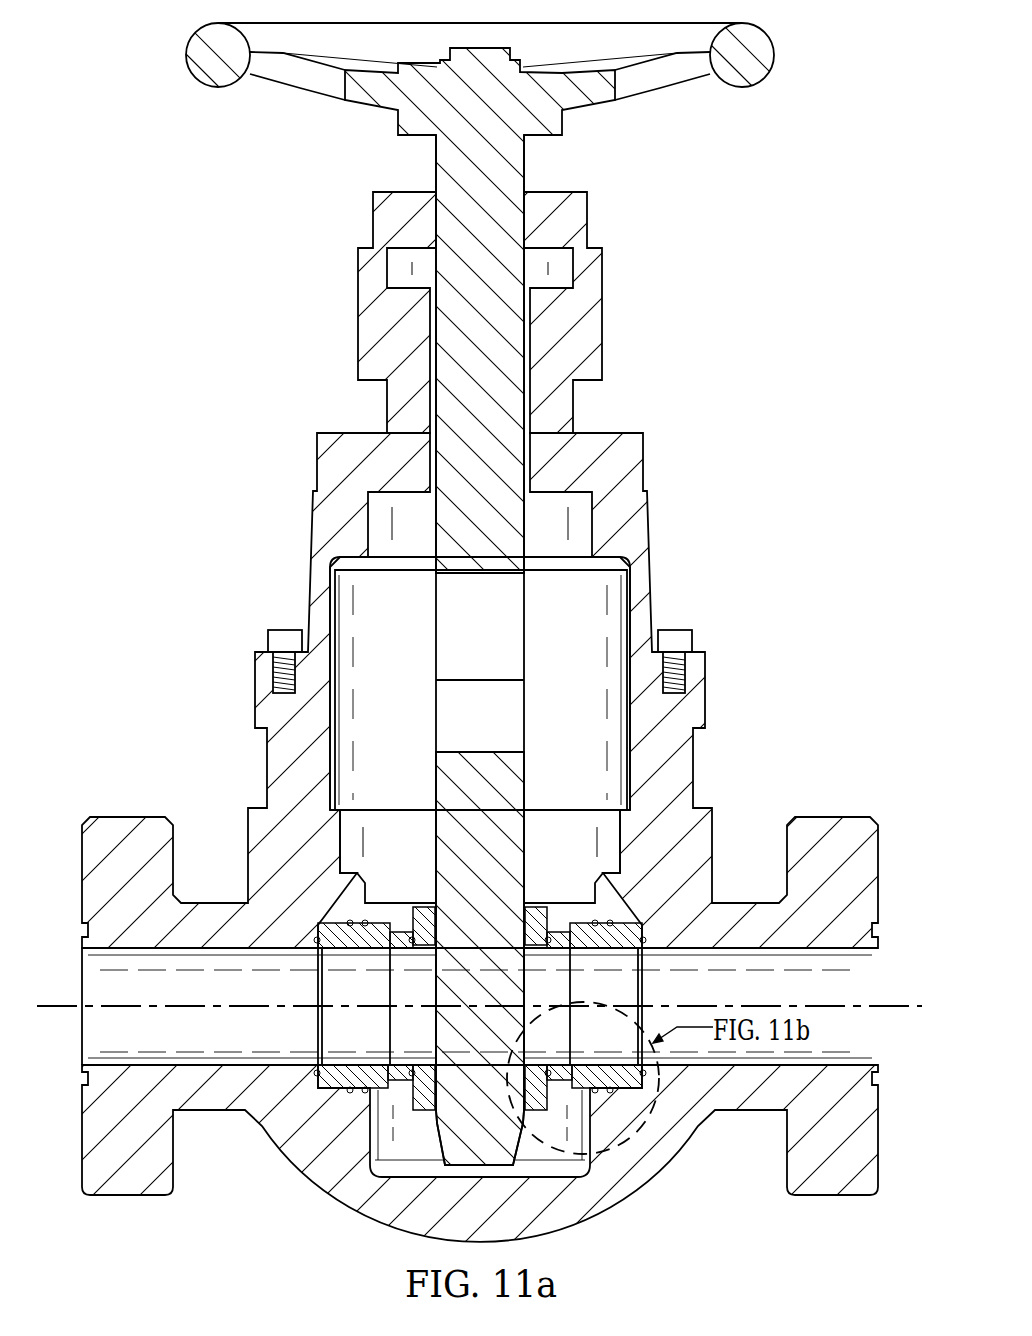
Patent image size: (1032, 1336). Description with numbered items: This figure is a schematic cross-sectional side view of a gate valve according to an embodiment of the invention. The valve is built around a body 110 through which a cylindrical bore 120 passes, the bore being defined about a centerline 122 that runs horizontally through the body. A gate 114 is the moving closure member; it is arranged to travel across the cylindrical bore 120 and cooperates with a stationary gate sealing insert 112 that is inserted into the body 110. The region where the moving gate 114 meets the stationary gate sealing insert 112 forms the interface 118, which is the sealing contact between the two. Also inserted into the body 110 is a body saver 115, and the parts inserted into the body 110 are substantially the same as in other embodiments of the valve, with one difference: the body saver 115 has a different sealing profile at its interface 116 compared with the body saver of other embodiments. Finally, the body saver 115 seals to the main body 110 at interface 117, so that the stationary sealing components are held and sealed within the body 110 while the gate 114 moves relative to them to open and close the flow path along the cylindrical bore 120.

The body 110 is at (113, 827).
The gate sealing insert 112 is at (422, 910).
The gate 114 is at (443, 782).
The body saver 115 is at (625, 912).
The interface 116 is at (388, 1025).
The interface 117 is at (642, 935).
The interface 118 is at (433, 965).
The cylindrical bore 120 is at (100, 1037).
The centerline 122 is at (902, 1005).